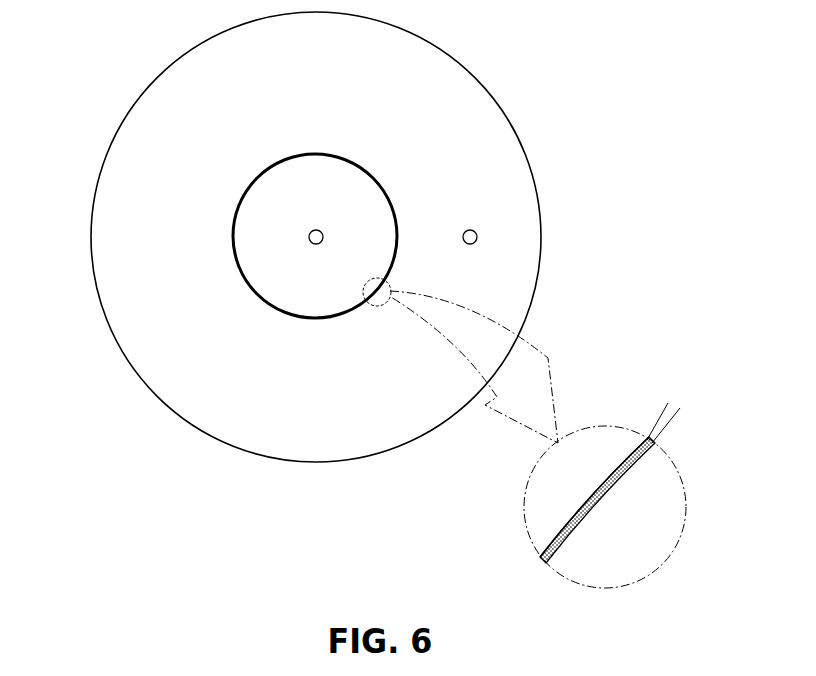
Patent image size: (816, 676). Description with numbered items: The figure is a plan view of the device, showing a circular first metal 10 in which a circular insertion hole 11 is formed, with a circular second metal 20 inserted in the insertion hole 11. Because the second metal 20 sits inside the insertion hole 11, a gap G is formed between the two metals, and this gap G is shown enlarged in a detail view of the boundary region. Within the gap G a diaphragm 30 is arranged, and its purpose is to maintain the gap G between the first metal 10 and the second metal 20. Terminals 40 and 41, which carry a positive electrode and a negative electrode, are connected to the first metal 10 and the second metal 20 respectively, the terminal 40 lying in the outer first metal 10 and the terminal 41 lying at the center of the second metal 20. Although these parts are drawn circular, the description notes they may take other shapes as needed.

The first metal 10 is at (104, 152).
The second metal 20 is at (362, 196).
The insertion hole 11 is at (628, 481).
The diaphragm 30 is at (542, 560).
The terminal 40 is at (478, 234).
The terminal 41 is at (309, 236).
The gap G is at (643, 393).